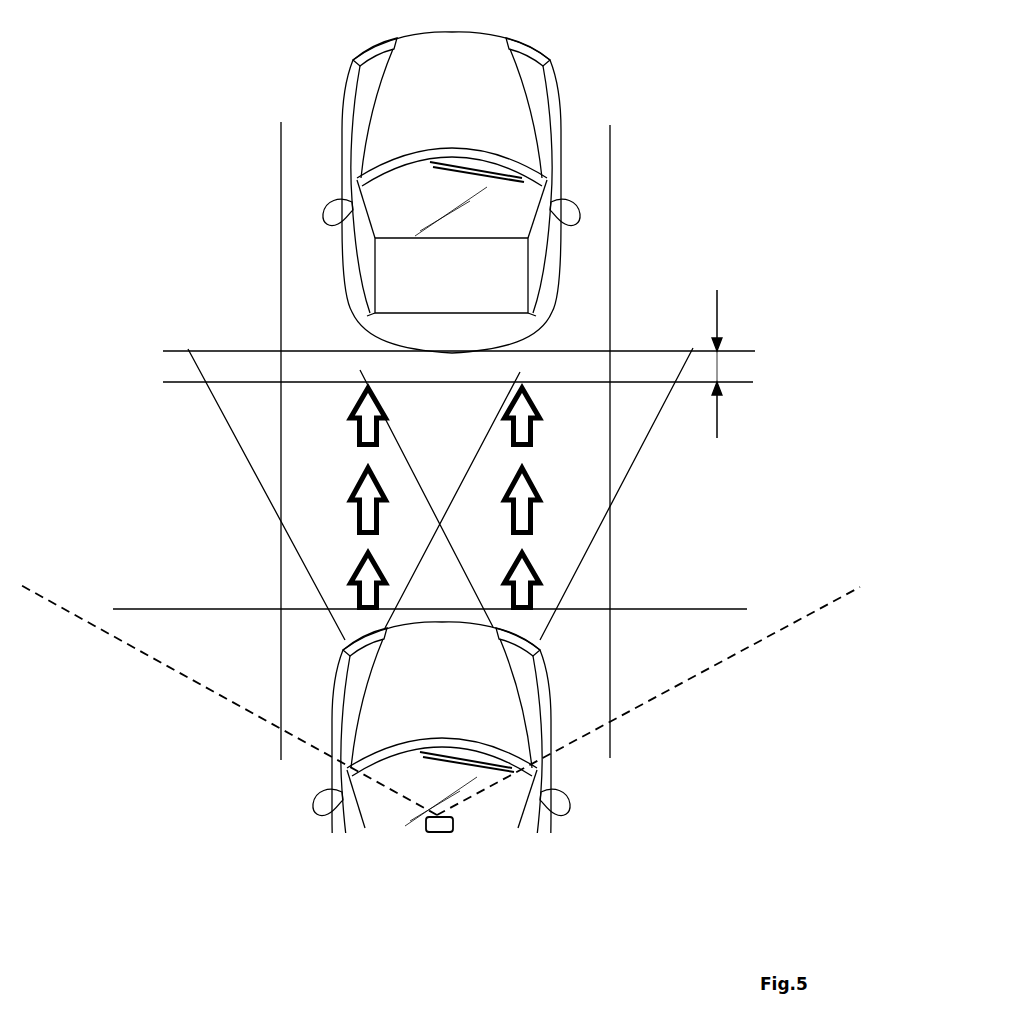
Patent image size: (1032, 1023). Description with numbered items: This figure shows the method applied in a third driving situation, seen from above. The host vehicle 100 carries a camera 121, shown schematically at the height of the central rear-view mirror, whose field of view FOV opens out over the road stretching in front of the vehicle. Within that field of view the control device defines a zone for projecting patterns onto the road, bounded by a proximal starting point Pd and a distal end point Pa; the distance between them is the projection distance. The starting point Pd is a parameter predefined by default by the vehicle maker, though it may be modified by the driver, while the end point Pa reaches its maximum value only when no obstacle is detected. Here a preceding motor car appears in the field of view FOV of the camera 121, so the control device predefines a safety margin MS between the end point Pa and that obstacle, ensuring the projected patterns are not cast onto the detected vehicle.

The host vehicle 100 is at (562, 786).
The camera 121 is at (452, 831).
The end point Pa is at (737, 353).
The safety margin MS is at (719, 420).
The starting point Pd is at (685, 611).
The field of view FOV is at (687, 687).